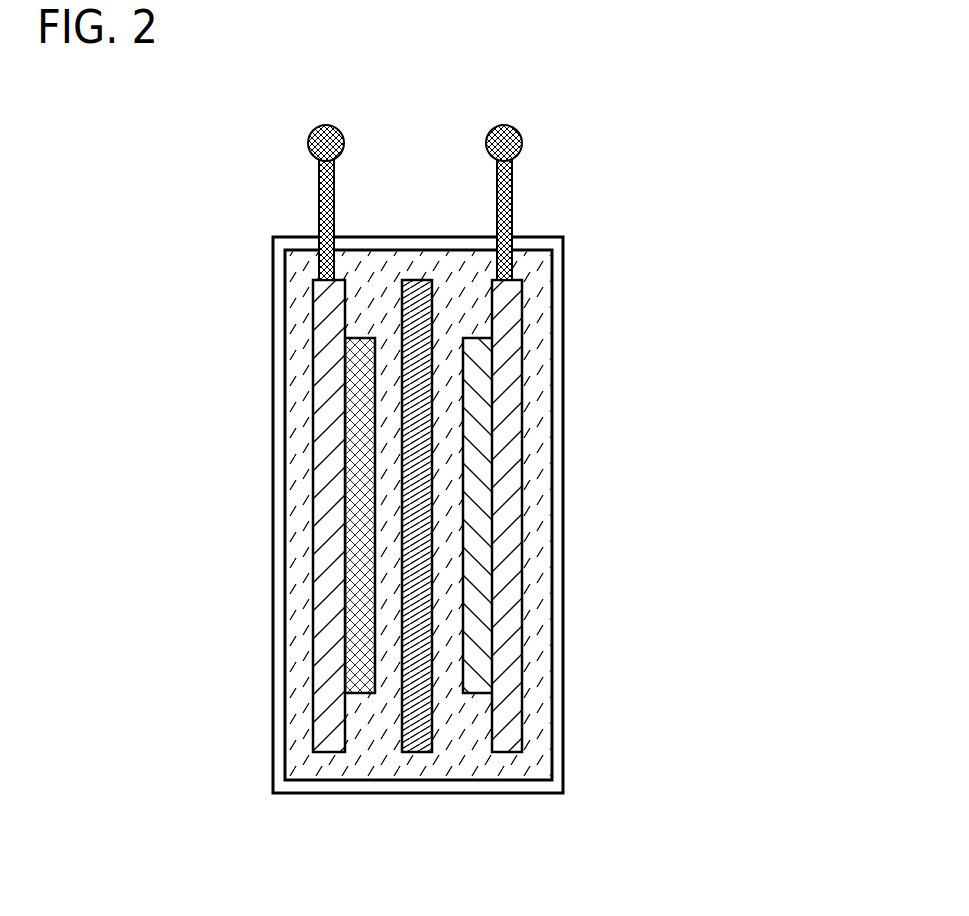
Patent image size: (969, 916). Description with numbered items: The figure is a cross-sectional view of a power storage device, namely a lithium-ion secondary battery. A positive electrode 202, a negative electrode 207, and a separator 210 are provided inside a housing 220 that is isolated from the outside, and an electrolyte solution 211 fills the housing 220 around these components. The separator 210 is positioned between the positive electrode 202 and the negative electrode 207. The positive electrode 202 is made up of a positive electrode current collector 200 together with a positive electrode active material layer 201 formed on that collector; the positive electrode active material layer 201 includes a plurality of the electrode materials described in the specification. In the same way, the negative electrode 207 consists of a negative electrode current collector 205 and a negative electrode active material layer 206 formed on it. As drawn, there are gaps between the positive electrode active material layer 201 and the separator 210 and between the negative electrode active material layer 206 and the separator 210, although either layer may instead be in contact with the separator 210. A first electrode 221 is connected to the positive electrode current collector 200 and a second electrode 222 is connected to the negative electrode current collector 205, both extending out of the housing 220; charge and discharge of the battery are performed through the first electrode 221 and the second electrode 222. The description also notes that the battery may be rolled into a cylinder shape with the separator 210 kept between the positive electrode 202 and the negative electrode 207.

The positive electrode current collector 200 is at (468, 490).
The positive electrode active material layer 201 is at (353, 693).
The positive electrode 202 is at (347, 598).
The negative electrode current collector 205 is at (515, 752).
The negative electrode active material layer 206 is at (473, 693).
The negative electrode 207 is at (526, 596).
The separator 210 is at (413, 278).
The electrolyte solution 211 is at (547, 268).
The housing 220 is at (558, 322).
The first electrode 221 is at (346, 141).
The second electrode 222 is at (522, 138).